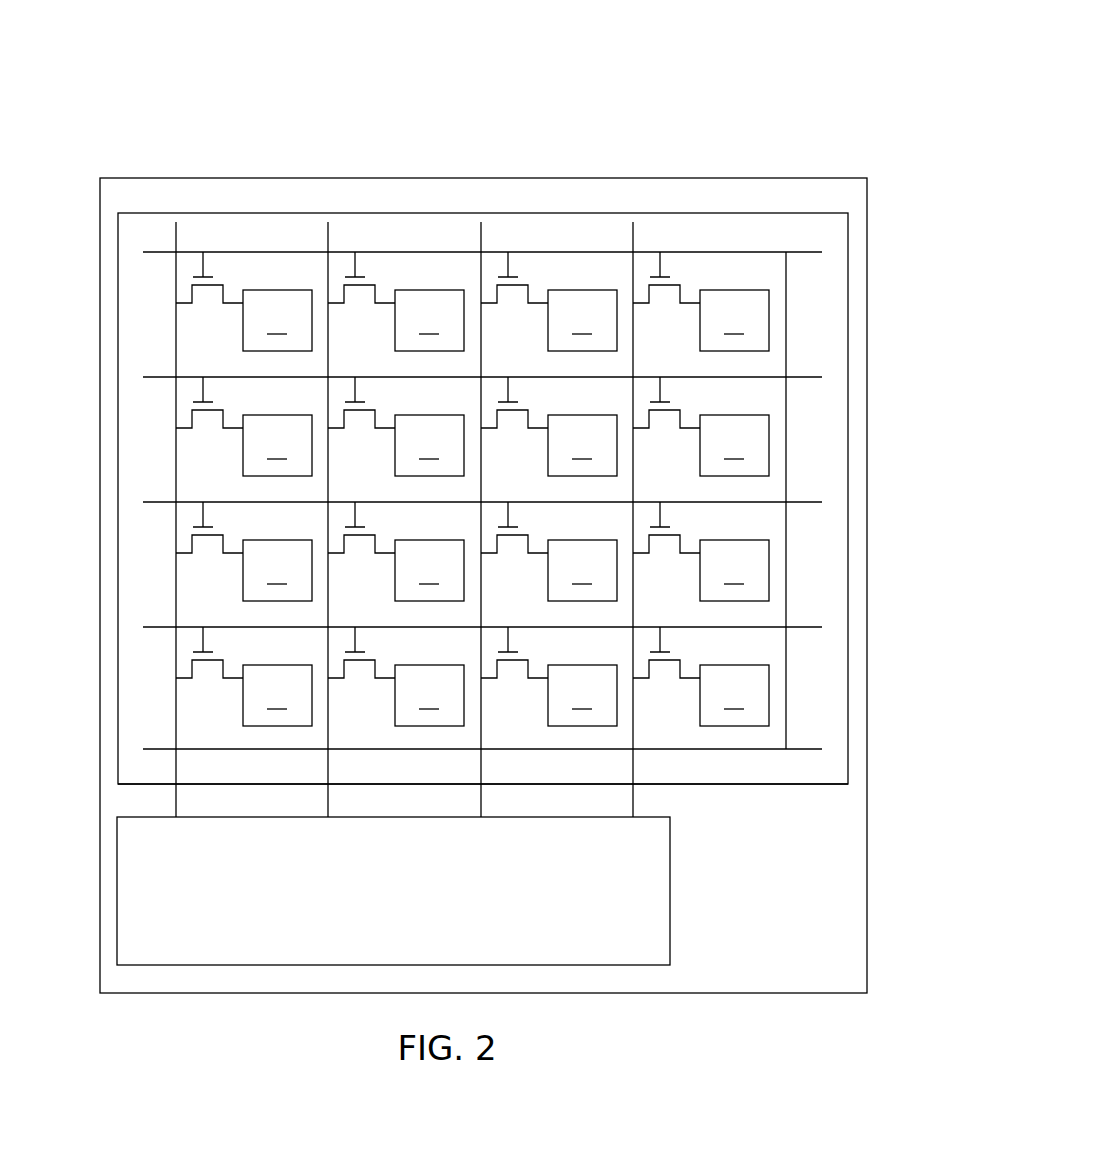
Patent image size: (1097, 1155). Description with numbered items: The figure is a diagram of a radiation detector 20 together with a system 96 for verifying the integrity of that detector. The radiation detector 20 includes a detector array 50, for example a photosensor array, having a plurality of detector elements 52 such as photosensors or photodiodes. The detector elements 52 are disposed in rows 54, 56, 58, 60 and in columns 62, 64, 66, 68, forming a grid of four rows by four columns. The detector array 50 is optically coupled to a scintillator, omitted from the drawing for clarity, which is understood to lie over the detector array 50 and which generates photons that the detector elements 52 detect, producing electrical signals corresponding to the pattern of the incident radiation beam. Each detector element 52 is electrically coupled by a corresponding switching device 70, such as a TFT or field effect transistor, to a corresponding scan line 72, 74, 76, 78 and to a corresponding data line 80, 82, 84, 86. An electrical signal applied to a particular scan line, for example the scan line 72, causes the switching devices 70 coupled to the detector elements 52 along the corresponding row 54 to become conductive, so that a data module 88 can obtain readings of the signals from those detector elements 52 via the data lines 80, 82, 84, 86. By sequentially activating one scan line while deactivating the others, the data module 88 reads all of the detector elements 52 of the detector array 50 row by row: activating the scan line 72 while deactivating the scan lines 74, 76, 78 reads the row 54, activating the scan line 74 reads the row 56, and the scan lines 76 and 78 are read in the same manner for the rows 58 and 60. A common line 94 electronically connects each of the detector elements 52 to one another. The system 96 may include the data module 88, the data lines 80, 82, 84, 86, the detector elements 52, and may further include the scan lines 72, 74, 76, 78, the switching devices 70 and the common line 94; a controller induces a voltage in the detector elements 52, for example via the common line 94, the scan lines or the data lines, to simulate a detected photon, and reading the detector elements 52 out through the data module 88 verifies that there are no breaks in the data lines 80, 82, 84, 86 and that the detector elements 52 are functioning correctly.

The radiation detector 20 is at (88, 246).
The detector array 50 is at (786, 200).
The detector elements 52 is at (506, 508).
The row 54 is at (794, 323).
The row 56 is at (794, 448).
The row 58 is at (794, 573).
The row 60 is at (794, 698).
The column 62 is at (256, 240).
The column 64 is at (410, 240).
The column 66 is at (561, 240).
The column 68 is at (713, 240).
The switching device 70 is at (213, 265).
The scan line 72 is at (170, 255).
The scan line 74 is at (170, 380).
The scan line 76 is at (170, 505).
The scan line 78 is at (170, 630).
The data line 80 is at (178, 237).
The data line 82 is at (330, 237).
The data line 84 is at (483, 237).
The data line 86 is at (635, 237).
The data module 88 is at (670, 890).
The common line 94 is at (752, 787).
The system for verifying the integrity of the radiation detector 96 is at (691, 54).